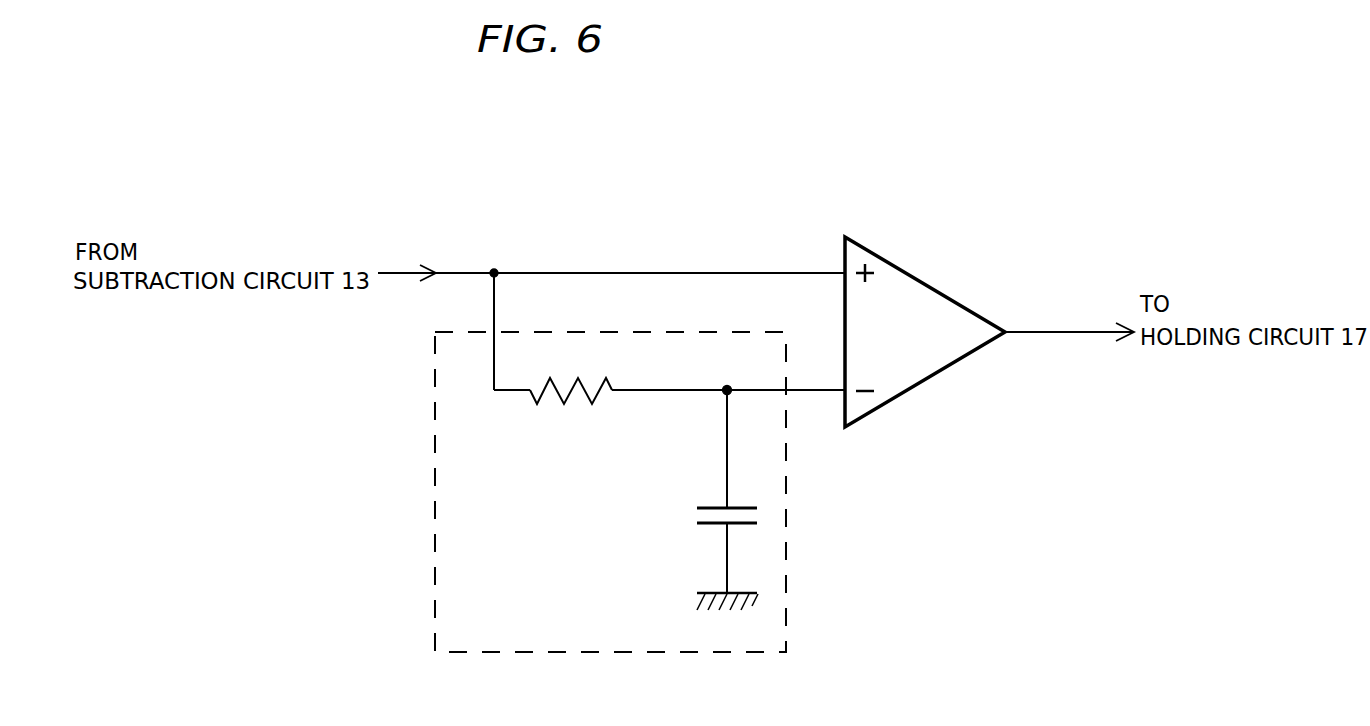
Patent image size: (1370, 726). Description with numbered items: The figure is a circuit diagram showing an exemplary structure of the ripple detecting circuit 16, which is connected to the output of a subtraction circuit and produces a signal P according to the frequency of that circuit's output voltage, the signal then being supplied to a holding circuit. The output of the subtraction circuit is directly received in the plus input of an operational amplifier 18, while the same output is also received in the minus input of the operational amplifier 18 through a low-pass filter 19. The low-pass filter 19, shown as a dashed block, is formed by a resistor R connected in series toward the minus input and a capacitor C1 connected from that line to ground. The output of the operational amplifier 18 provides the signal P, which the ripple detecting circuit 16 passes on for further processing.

The ripple detecting circuit 16 is at (553, 186).
The operational amplifier 18 is at (954, 364).
The low-pass filter 19 is at (435, 418).
The resistor R is at (569, 402).
The capacitor C1 is at (697, 511).
The signal P is at (1060, 331).